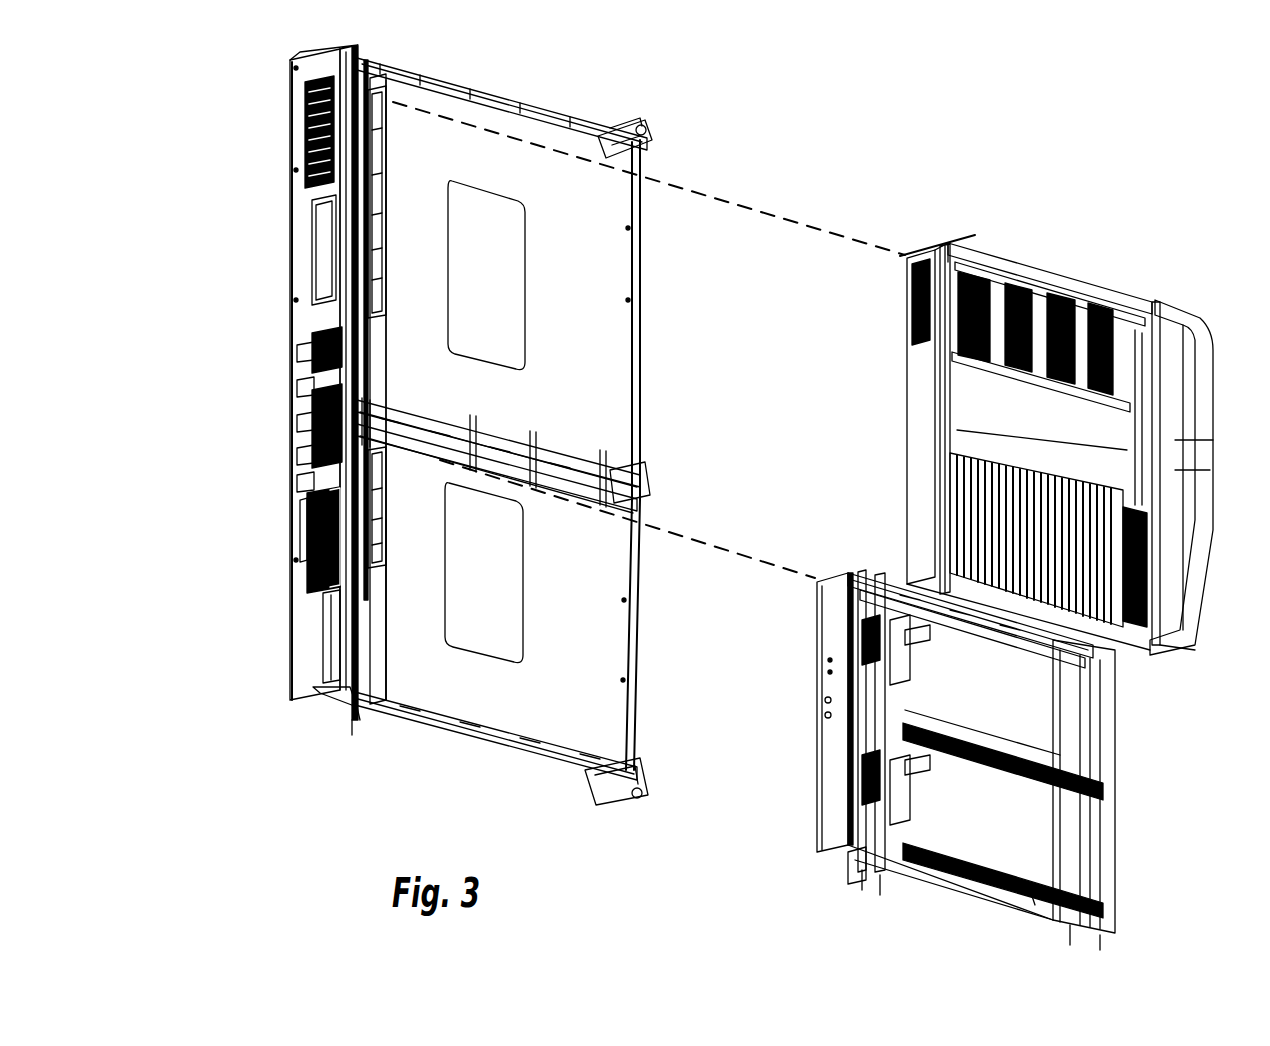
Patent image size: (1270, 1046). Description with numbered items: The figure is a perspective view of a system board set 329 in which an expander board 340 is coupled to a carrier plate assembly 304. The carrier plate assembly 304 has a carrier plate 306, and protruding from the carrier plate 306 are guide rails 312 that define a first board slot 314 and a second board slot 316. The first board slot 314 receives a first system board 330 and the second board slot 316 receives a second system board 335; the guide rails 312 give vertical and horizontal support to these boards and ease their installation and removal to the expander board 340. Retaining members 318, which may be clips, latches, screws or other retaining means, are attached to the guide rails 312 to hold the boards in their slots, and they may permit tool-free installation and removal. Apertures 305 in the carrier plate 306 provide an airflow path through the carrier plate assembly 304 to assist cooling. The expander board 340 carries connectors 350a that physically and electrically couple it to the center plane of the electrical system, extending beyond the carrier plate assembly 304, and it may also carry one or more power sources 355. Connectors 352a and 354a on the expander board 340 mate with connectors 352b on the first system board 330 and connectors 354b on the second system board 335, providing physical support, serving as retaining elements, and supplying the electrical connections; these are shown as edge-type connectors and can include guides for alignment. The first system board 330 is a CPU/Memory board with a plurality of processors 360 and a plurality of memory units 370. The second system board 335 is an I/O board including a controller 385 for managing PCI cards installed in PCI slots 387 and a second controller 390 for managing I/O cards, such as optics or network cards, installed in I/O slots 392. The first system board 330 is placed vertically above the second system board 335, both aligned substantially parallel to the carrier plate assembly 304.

The carrier plate assembly 304 is at (526, 143).
The apertures 305 is at (498, 333).
The carrier plate 306 is at (488, 700).
The guide rails 312 is at (590, 455).
The first board slot 314 is at (600, 260).
The second board slot 316 is at (600, 612).
The retaining members 318 is at (630, 125).
The system board set 329 is at (884, 131).
The first system board 330 is at (1118, 292).
The second system board 335 is at (860, 846).
The expander board 340 is at (312, 596).
The connectors 350a is at (300, 422).
The connectors 352a is at (390, 240).
The connectors 352b is at (950, 245).
The connectors 354a is at (387, 507).
The connectors 354b is at (817, 649).
The power sources 355 is at (310, 540).
The processors 360 is at (1036, 272).
The memory units 370 is at (1110, 640).
The controller 385 is at (817, 595).
The PCI slots 387 is at (1025, 711).
The second controller 390 is at (817, 798).
The I/O slots 392 is at (1025, 823).